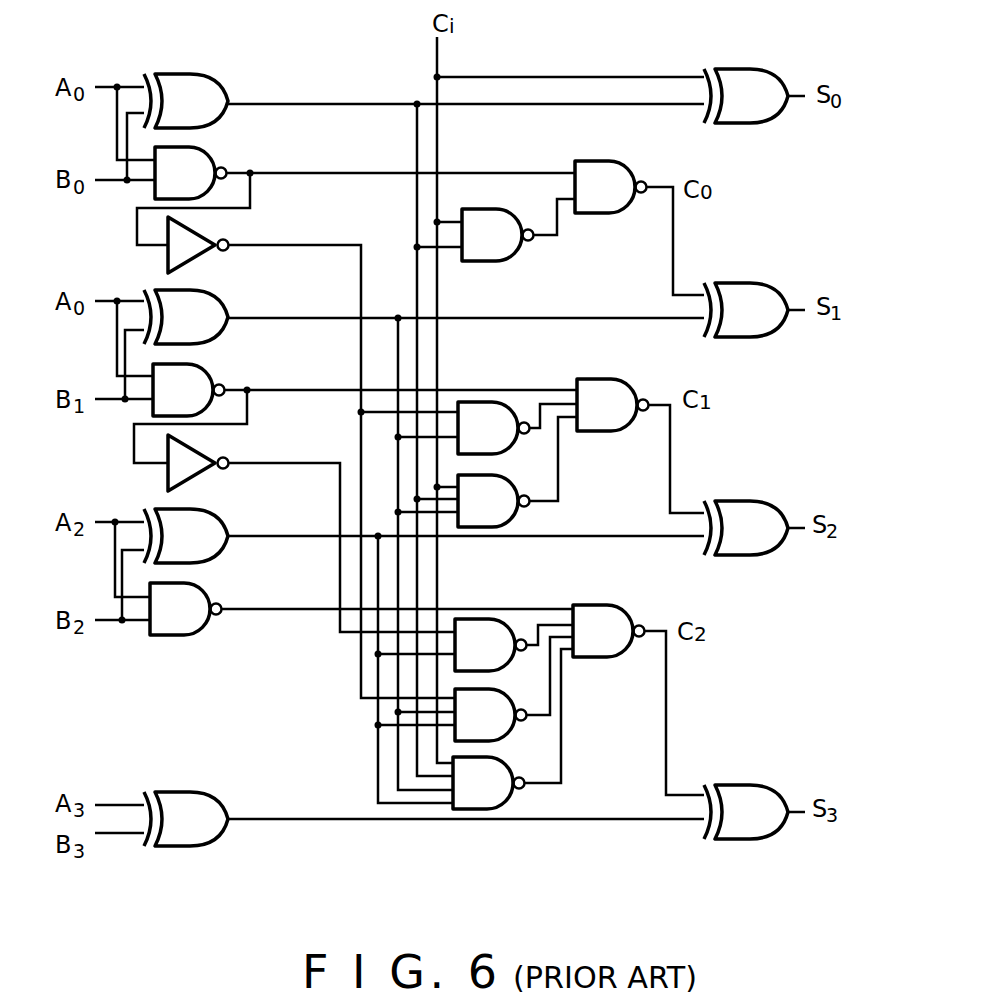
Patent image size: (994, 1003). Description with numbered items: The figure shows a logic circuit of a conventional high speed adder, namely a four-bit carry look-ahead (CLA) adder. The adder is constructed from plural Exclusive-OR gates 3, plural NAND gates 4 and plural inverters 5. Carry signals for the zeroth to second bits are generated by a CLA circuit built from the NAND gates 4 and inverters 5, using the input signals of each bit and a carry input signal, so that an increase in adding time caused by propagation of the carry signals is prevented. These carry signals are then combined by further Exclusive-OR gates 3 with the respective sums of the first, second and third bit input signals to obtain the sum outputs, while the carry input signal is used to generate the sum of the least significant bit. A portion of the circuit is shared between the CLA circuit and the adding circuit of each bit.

The Exclusive-OR gate 3 is at (219, 83).
The NAND gate 4 is at (213, 158).
The inverter 5 is at (204, 233).